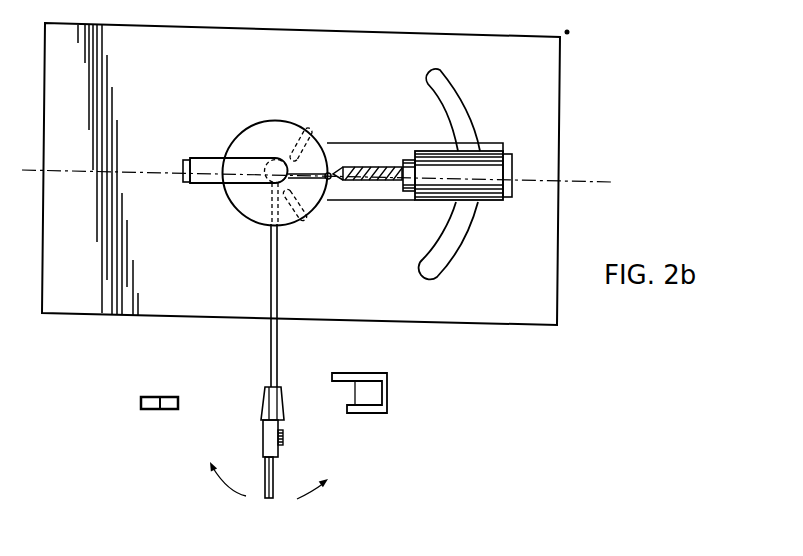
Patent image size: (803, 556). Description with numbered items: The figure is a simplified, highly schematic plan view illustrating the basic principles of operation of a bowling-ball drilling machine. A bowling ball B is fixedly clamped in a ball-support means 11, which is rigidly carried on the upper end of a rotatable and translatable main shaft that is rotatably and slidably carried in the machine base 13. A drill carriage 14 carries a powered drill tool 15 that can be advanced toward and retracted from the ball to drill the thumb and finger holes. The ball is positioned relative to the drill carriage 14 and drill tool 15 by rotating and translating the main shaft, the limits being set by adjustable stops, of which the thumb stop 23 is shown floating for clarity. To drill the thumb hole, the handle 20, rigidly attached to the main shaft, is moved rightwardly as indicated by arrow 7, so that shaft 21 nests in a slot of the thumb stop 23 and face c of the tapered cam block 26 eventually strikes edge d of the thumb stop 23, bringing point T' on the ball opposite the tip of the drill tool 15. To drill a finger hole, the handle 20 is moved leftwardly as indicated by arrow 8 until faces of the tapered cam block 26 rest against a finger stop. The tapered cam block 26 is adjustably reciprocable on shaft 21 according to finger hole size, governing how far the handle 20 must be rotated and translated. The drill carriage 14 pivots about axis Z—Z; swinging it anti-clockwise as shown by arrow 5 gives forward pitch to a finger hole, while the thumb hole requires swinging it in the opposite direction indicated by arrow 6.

The arrow 5 is at (469, 73).
The arrow 6 is at (452, 286).
The arrow 7 is at (305, 497).
The arrow 8 is at (235, 498).
The ball-support means 11 is at (212, 162).
The machine base 13 is at (190, 290).
The drill carriage 14 is at (437, 167).
The drill tool 15 is at (365, 170).
The handle 20 is at (272, 487).
The shaft 21 is at (272, 371).
The thumb stop 23 is at (387, 398).
The tapered cam block 26 is at (287, 413).